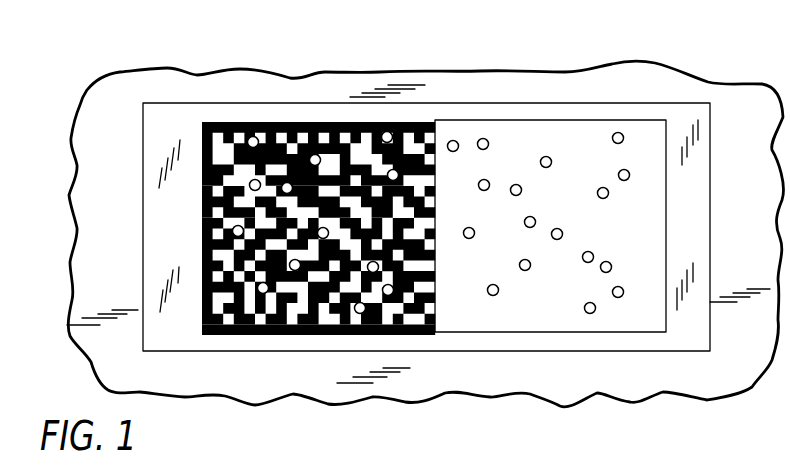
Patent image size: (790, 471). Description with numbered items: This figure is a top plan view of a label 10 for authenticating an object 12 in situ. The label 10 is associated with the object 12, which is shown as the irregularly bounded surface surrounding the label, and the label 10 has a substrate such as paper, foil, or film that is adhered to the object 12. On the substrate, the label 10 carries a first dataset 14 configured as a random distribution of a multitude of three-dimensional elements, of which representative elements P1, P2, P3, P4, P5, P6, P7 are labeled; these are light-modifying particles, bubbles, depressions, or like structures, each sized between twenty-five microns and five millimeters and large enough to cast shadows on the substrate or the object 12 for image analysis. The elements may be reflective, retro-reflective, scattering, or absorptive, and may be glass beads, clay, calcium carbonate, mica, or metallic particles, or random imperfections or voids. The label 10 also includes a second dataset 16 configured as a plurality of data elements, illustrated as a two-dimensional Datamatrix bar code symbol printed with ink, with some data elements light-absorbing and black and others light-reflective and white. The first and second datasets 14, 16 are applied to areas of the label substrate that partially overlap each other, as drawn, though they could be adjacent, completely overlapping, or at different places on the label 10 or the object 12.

The label 10 is at (141, 152).
The object 12 is at (105, 233).
The first dataset 14 is at (558, 152).
The second dataset 16 is at (323, 131).
The three-dimensional element P1 is at (457, 151).
The three-dimensional element P2 is at (472, 238).
The three-dimensional element P3 is at (524, 259).
The three-dimensional element P4 is at (558, 240).
The three-dimensional element P5 is at (588, 251).
The three-dimensional element P6 is at (609, 262).
The three-dimensional element P7 is at (618, 287).